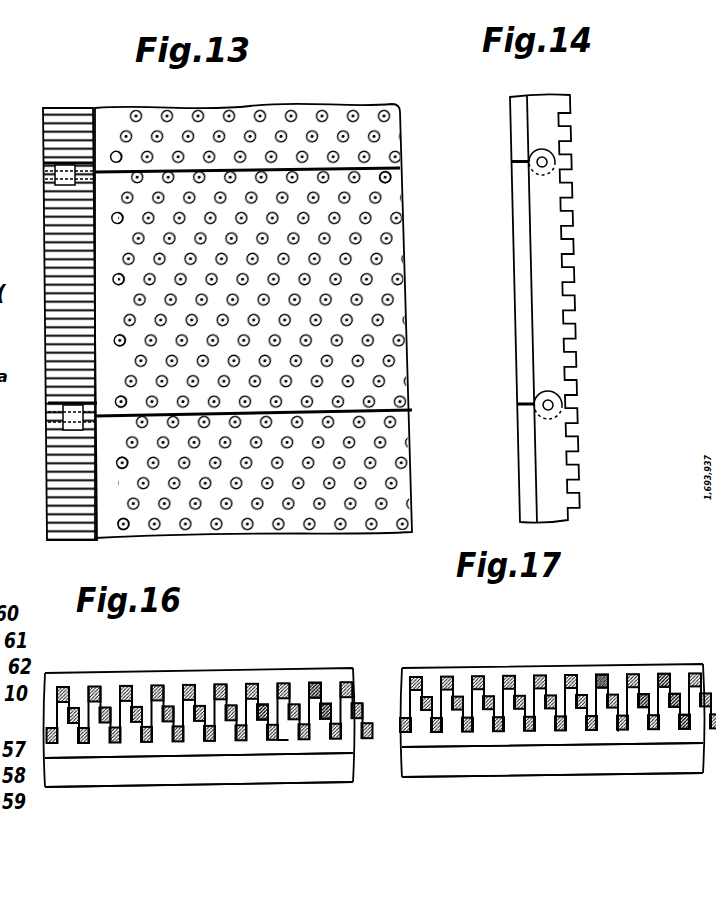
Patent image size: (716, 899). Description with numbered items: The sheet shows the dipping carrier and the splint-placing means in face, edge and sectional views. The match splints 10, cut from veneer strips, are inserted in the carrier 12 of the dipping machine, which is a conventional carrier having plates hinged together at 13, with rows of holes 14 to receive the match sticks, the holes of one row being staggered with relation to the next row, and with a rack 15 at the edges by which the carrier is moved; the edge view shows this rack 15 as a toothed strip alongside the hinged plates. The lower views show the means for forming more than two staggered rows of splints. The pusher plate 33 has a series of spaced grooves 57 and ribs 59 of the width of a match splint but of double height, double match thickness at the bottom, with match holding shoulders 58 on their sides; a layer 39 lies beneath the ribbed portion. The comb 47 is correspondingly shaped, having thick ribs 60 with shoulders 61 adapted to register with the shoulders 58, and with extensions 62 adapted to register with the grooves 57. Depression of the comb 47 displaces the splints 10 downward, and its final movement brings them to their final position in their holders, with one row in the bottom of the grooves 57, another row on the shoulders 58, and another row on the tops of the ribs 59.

In FIG. 16, the match splints 10 is at (256, 682).
In FIG. 17, the match splints 10 is at (485, 680).
In FIG. 13, the carrier 12 is at (372, 104).
In FIG. 13, the hinge 13 is at (60, 181).
In FIG. 14, the hinge 13 is at (538, 166).
In FIG. 13, the holes 14 is at (391, 178).
In FIG. 13, the rack 15 is at (50, 320).
In FIG. 14, the rack 15 is at (573, 233).
In FIG. 16, the pusher plate 33 is at (157, 746).
In FIG. 17, the pusher plate 33 is at (469, 738).
In FIG. 16, the base layer 39 is at (200, 773).
In FIG. 17, the base layer 39 is at (543, 760).
In FIG. 16, the comb 47 is at (201, 670).
In FIG. 17, the comb 47 is at (450, 668).
In FIG. 17, the spaced grooves 57 is at (683, 714).
In FIG. 16, the match holding shoulders 58 is at (262, 722).
In FIG. 17, the match holding shoulders 58 is at (669, 708).
In FIG. 16, the ribs 59 is at (275, 740).
In FIG. 17, the ribs 59 is at (662, 688).
In FIG. 16, the thick ribs 60 is at (322, 678).
In FIG. 17, the thick ribs 60 is at (611, 673).
In FIG. 16, the shoulders 61 is at (324, 692).
In FIG. 17, the shoulders 61 is at (620, 708).
In FIG. 16, the extensions 62 is at (333, 712).
In FIG. 17, the extensions 62 is at (650, 692).